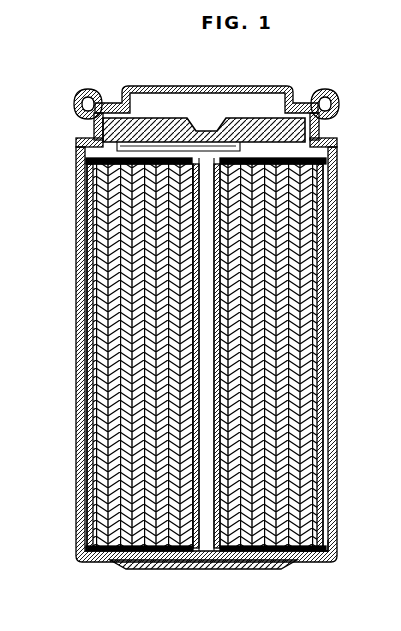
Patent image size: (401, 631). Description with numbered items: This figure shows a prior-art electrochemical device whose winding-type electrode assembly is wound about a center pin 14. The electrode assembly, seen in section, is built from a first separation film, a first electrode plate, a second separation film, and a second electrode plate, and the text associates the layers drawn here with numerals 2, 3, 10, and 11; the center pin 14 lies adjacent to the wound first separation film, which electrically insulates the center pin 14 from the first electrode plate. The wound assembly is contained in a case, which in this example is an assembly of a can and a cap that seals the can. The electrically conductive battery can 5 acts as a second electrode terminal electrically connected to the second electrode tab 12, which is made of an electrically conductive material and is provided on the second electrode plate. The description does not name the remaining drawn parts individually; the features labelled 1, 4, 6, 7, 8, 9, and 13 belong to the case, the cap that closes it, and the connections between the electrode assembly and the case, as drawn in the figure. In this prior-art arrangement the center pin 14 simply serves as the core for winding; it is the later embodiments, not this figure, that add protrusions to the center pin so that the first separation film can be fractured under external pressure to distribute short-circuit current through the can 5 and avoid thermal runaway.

The battery case 1 is at (337, 211).
The positive electrode 2 is at (320, 308).
The negative electrode 3 is at (320, 392).
The case bottom 4 is at (306, 564).
The battery can 5 is at (76, 246).
The gasket 6 is at (82, 90).
The cap terminal 7 is at (173, 87).
The sealing plate 8 is at (271, 118).
The gasket 9 is at (331, 103).
The separator 10 is at (92, 311).
The electrode plate 11 is at (120, 378).
The second electrode tab 12 is at (123, 566).
The lead tab 13 is at (254, 118).
The center pin 14 is at (218, 568).